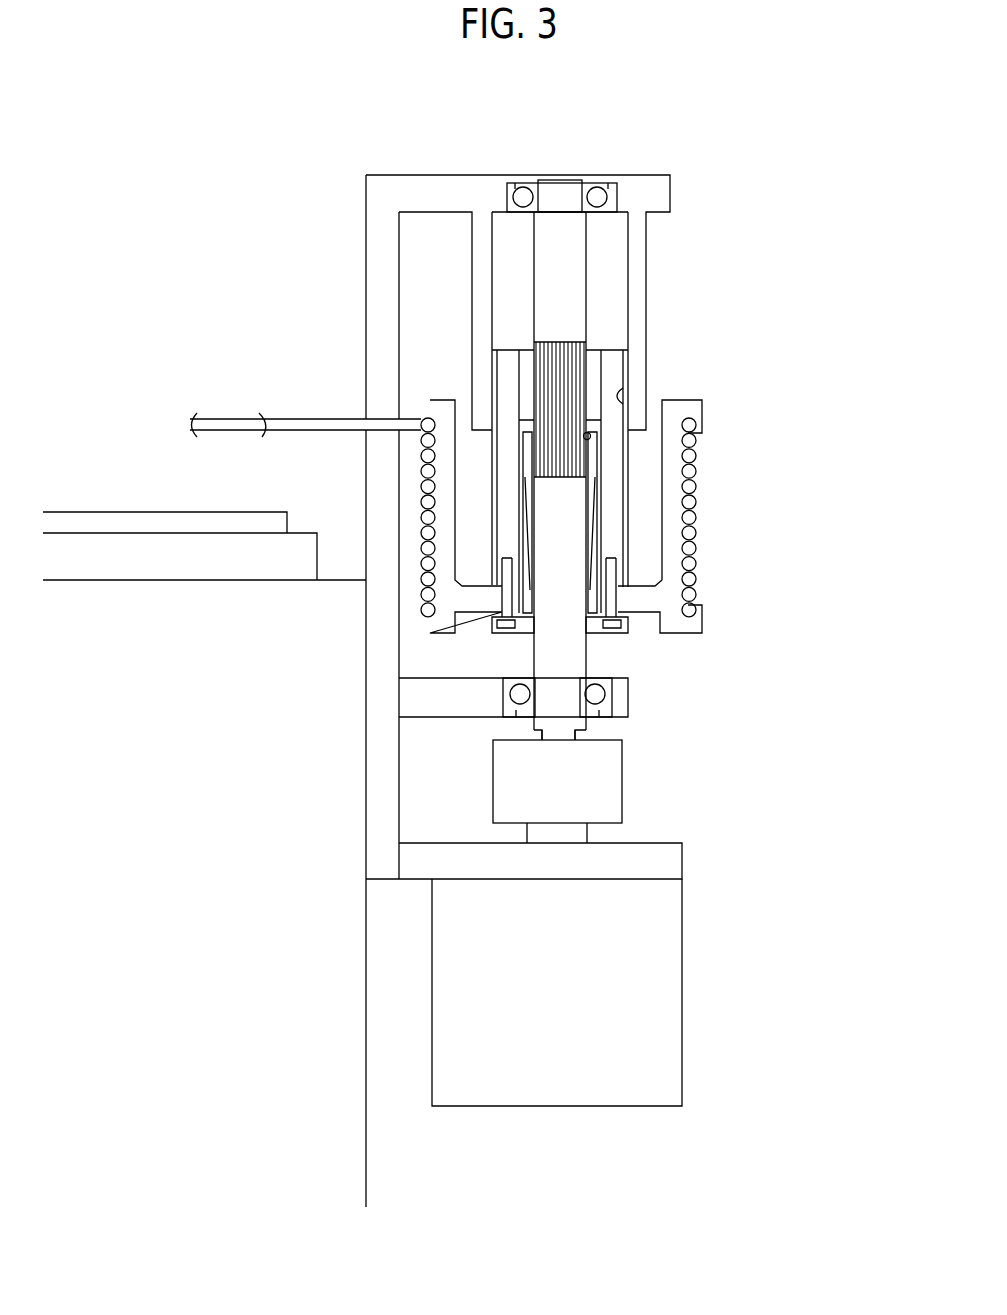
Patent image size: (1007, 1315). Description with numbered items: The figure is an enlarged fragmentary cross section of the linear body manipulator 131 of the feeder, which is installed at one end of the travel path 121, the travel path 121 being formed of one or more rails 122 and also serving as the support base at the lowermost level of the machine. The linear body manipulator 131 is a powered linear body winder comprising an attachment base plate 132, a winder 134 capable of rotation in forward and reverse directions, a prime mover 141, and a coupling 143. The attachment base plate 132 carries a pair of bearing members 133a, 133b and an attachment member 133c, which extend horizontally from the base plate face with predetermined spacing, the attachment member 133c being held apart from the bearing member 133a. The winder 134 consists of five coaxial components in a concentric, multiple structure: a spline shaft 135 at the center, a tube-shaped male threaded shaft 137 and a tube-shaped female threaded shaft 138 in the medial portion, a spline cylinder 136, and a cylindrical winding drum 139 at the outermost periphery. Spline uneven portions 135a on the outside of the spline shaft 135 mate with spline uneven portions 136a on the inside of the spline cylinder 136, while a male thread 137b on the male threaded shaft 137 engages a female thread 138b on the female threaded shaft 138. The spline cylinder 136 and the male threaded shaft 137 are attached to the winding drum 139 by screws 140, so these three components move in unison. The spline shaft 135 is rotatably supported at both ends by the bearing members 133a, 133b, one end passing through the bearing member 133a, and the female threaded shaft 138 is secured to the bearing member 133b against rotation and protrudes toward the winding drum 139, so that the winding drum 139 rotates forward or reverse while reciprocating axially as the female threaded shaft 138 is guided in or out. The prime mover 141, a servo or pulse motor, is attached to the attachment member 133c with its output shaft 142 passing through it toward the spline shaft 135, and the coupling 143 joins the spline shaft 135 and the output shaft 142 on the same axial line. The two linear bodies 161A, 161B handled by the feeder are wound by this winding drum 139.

The travel path 121 is at (85, 593).
The rail 122 is at (132, 522).
The linear body manipulator 131 is at (702, 912).
The attachment base plate 132 is at (382, 618).
The bearing member 133a is at (430, 697).
The bearing member 133b is at (653, 195).
The attachment member 133c is at (428, 865).
The winder 134 is at (721, 648).
The spline shaft 135 is at (560, 342).
The spline uneven portions 135a is at (540, 387).
The spline cylinder 136 is at (520, 514).
The spline uneven portions 136a is at (591, 434).
The male threaded shaft 137 is at (605, 511).
The male thread 137b is at (494, 365).
The female threaded shaft 138 is at (632, 315).
The female thread 138b is at (615, 391).
The winding drum 139 is at (672, 489).
The screws 140 is at (612, 613).
The prime mover 141 is at (633, 1022).
The output shaft 142 is at (623, 835).
The coupling 143 is at (598, 787).
The linear body 161A is at (297, 427).
The linear body 161B is at (240, 427).